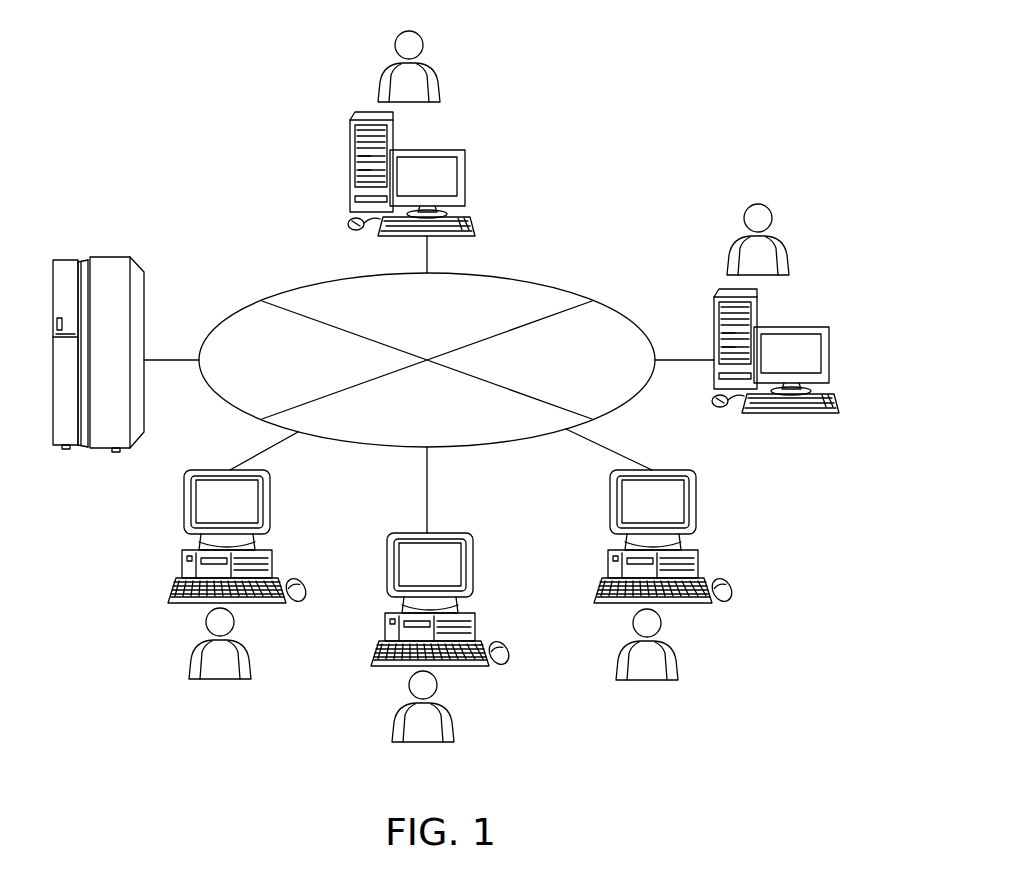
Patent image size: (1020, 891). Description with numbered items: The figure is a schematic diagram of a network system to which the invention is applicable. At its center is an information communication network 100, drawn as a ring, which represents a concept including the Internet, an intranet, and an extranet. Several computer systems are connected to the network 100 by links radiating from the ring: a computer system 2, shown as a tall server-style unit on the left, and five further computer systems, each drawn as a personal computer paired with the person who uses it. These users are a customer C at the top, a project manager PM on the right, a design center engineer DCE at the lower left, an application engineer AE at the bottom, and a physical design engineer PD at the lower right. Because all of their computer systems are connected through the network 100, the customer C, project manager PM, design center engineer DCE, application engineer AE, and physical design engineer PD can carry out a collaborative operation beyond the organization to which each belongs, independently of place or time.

The information communication network 100 is at (553, 291).
The computer system 2 is at (105, 256).
The customer C is at (440, 78).
The project manager PM is at (790, 262).
The design center engineer DCE is at (250, 662).
The application engineer AE is at (455, 727).
The physical design engineer PD is at (677, 664).